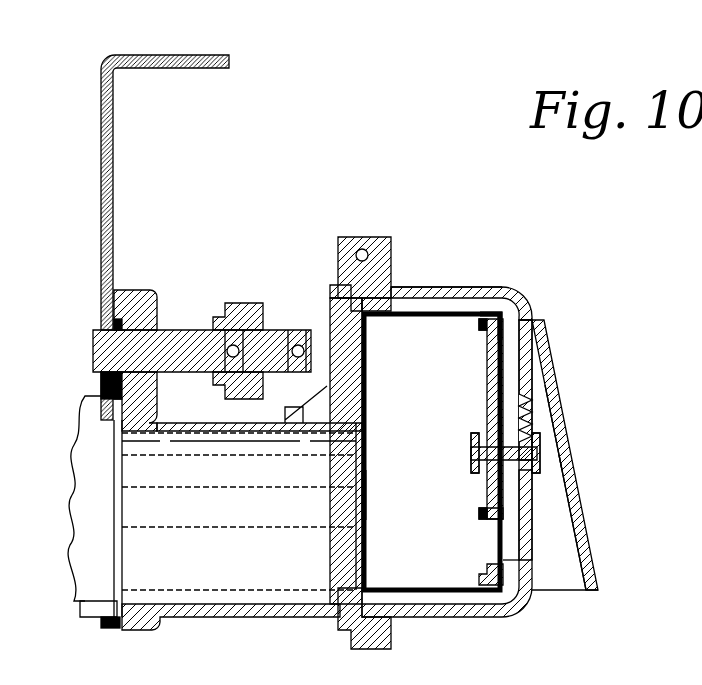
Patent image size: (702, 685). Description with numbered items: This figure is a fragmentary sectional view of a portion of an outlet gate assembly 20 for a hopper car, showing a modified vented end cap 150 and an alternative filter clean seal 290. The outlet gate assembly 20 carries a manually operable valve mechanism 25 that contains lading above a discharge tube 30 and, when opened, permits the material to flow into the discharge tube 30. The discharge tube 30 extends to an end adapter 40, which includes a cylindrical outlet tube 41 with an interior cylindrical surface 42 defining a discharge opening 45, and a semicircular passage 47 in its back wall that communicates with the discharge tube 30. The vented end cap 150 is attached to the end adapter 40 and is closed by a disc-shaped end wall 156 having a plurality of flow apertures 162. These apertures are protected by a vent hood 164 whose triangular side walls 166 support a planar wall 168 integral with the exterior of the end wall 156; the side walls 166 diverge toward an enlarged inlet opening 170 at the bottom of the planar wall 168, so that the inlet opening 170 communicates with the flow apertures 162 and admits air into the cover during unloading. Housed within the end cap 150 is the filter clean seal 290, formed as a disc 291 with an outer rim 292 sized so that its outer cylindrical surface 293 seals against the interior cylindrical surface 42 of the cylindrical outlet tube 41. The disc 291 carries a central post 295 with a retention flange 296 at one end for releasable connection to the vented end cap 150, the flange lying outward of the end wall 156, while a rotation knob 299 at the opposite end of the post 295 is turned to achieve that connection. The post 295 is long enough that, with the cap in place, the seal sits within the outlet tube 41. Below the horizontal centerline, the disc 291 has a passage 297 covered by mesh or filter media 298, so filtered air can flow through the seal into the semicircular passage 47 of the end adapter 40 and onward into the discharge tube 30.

The outlet gate assembly 20 is at (126, 46).
The valve mechanism 25 is at (176, 340).
The discharge tube 30 is at (98, 566).
The end adapter 40 is at (307, 620).
The cylindrical outlet tube 41 is at (415, 300).
The interior cylindrical surface 42 is at (391, 320).
The discharge opening 45 is at (598, 588).
The semicircular passage 47 is at (368, 495).
The vented end cap 150 is at (479, 282).
The disc-shaped end wall 156 is at (540, 498).
The flow apertures 162 is at (540, 440).
The vent hood 164 is at (543, 410).
The triangular side walls 166 is at (558, 545).
The planar wall 168 is at (528, 503).
The inlet opening 170 is at (568, 602).
The filter clean seal 290 is at (549, 378).
The disc 291 is at (503, 362).
The outer rim 292 is at (497, 315).
The outer cylindrical surface 293 is at (509, 565).
The central post 295 is at (541, 452).
The retention flange 296 is at (540, 461).
The passage 297 is at (493, 525).
The filter media 298 is at (485, 547).
The rotation knob 299 is at (471, 433).